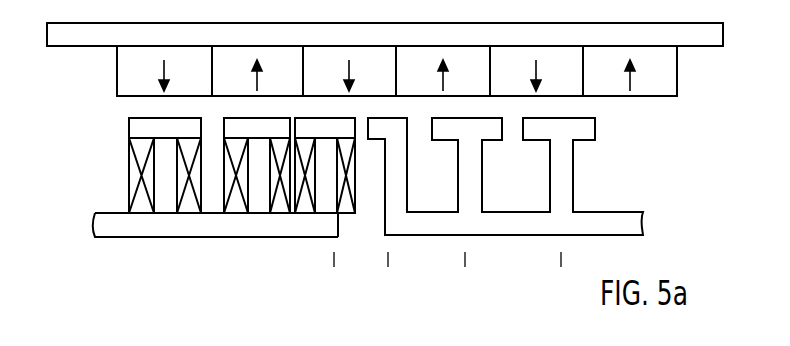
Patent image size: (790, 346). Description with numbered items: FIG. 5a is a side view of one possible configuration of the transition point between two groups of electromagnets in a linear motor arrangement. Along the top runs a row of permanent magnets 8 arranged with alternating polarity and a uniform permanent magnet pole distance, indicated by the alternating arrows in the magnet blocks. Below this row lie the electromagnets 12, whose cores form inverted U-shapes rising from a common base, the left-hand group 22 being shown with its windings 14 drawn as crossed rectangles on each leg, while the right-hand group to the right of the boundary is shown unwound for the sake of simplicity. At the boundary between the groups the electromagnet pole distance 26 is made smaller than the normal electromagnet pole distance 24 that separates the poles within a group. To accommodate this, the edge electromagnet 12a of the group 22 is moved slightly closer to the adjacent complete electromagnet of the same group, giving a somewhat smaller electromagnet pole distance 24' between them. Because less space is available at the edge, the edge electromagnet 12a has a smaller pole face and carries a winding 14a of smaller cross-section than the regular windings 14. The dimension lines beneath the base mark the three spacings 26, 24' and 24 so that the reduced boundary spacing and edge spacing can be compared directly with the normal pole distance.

The permanent magnets 8 is at (280, 67).
The electromagnets 12 is at (165, 192).
The edge electromagnet 12a is at (327, 190).
The windings 14 is at (140, 165).
The winding of edge electromagnet 14a is at (350, 176).
The group of electromagnets 22 is at (217, 244).
The normal electromagnet pole distance 24 is at (513, 269).
The smaller electromagnet pole distance 24' is at (426, 269).
The electromagnet pole distance at group boundary 26 is at (388, 259).